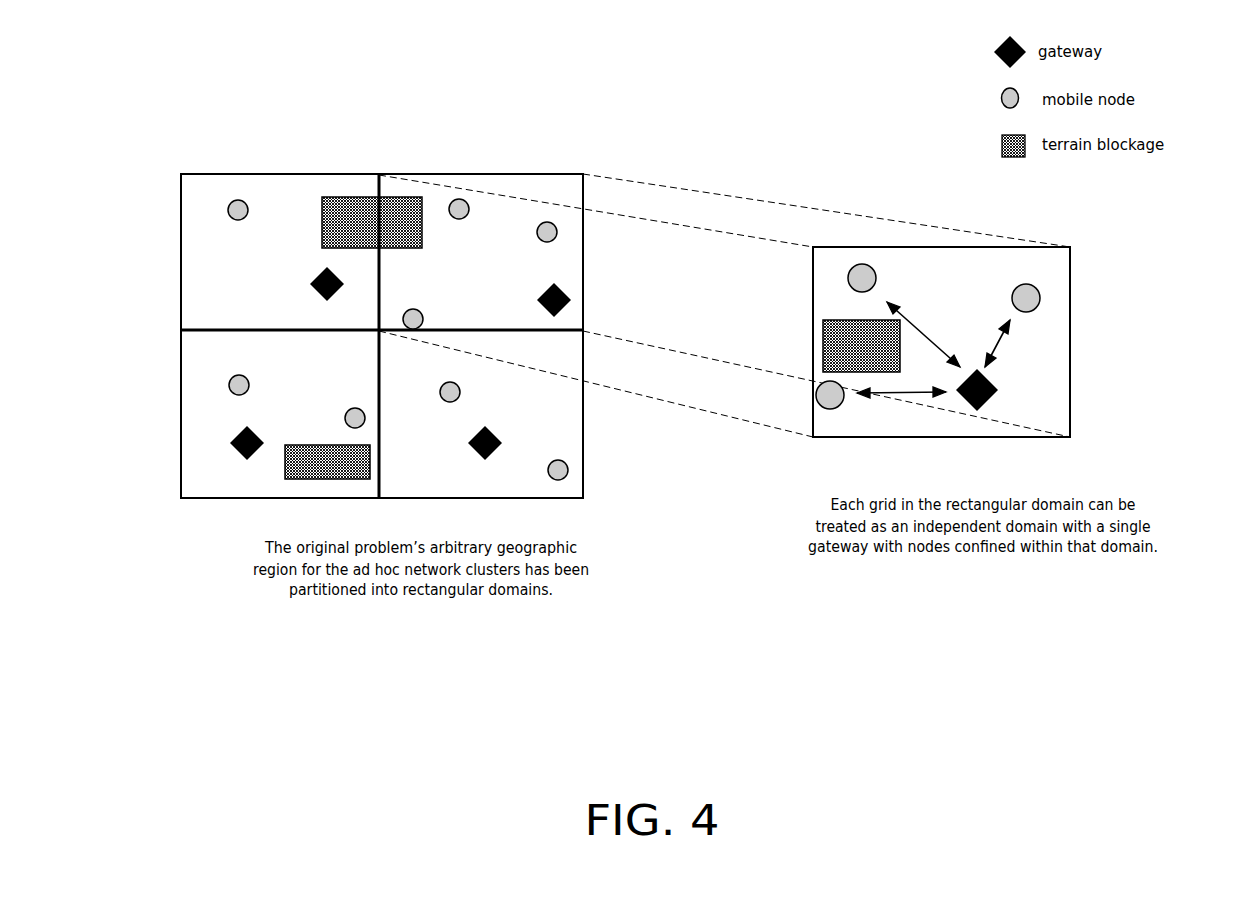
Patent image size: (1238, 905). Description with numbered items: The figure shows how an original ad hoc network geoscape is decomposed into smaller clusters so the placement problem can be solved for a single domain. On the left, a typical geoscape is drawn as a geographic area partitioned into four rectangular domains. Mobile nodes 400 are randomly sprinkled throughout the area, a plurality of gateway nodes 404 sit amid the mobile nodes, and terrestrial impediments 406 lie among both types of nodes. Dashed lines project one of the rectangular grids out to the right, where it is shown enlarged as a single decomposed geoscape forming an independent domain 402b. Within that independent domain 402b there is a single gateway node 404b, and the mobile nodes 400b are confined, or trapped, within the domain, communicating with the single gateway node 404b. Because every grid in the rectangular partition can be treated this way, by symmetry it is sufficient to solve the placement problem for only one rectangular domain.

The mobile nodes 400 is at (348, 403).
The gateway nodes 404 is at (317, 273).
The terrestrial impediments 406 is at (360, 195).
The mobile nodes 400b is at (845, 281).
The independent domain 402b is at (1073, 362).
The single gateway node 404b is at (993, 397).